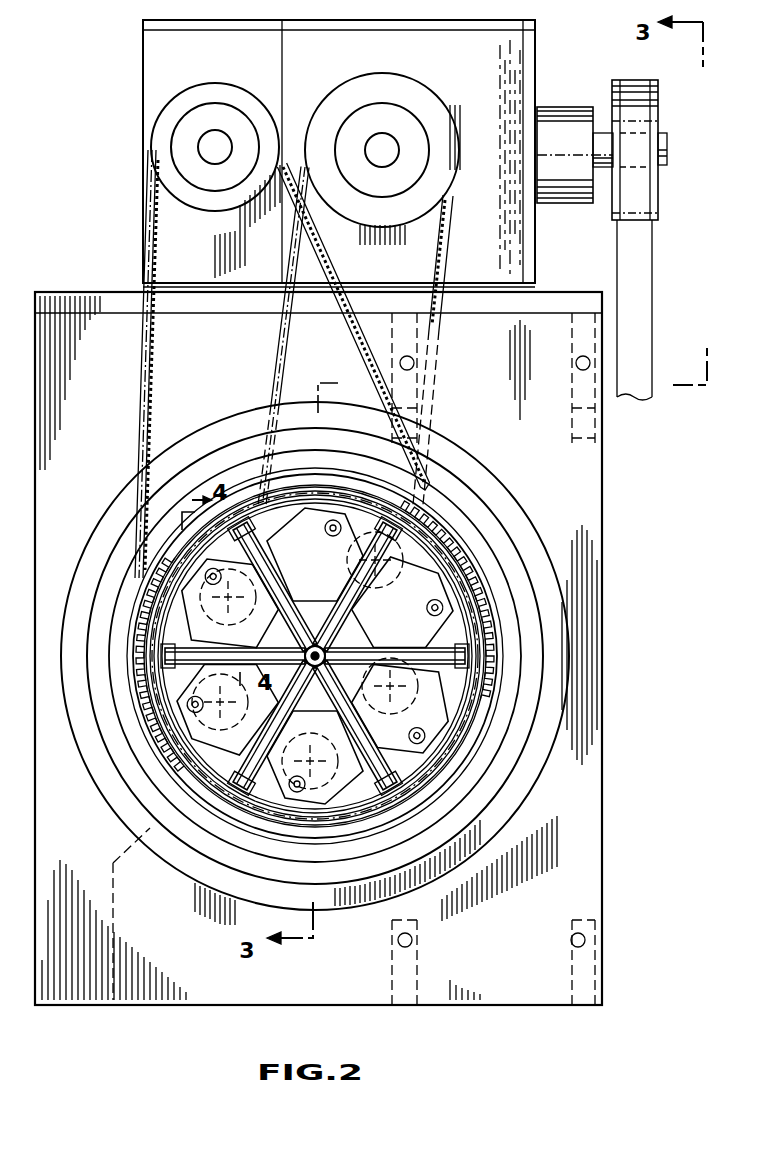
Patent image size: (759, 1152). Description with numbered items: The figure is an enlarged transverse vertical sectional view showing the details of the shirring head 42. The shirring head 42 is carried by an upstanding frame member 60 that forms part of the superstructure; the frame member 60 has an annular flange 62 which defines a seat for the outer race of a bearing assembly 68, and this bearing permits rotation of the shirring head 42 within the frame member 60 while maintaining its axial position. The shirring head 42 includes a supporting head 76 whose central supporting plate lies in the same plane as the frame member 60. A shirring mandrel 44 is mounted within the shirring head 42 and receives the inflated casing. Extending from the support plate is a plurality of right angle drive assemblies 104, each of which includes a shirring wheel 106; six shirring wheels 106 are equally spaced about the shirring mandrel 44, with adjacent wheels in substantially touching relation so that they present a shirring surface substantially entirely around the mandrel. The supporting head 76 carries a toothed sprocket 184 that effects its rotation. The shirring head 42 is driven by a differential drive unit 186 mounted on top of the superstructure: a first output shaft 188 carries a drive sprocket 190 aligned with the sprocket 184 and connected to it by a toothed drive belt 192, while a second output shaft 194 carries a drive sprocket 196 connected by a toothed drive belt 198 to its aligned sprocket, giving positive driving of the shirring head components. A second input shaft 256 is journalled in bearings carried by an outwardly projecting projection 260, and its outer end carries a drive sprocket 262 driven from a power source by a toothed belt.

The differential drive unit 186 is at (168, 69).
The drive sprocket 190 is at (228, 98).
The first output shaft 188 is at (213, 150).
The second output shaft 194 is at (382, 134).
The drive sprocket 196 is at (434, 110).
The drive belt 198 is at (444, 255).
The drive belt 192 is at (158, 392).
The projection 260 is at (556, 120).
The drive sprocket 262 is at (640, 98).
The second input shaft 256 is at (668, 150).
The shirring head 42 is at (57, 282).
The frame member 60 is at (565, 852).
The annular flange 62 is at (86, 728).
The bearing assembly 68 is at (160, 806).
The supporting head 76 is at (472, 560).
The toothed sprocket 184 is at (442, 566).
The shirring mandrel 44 is at (352, 628).
The right angle drive assembly 104 is at (192, 577).
The shirring wheel 106 is at (252, 516).